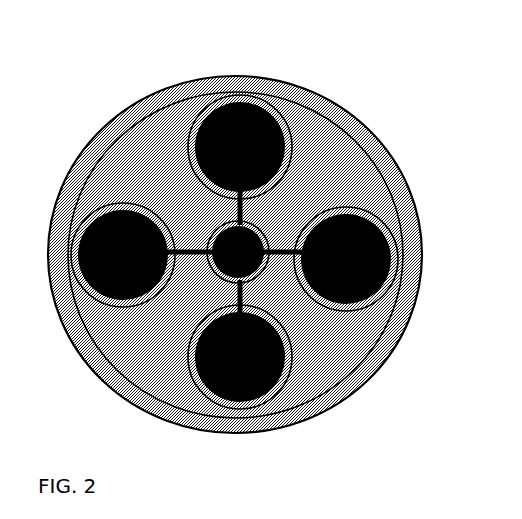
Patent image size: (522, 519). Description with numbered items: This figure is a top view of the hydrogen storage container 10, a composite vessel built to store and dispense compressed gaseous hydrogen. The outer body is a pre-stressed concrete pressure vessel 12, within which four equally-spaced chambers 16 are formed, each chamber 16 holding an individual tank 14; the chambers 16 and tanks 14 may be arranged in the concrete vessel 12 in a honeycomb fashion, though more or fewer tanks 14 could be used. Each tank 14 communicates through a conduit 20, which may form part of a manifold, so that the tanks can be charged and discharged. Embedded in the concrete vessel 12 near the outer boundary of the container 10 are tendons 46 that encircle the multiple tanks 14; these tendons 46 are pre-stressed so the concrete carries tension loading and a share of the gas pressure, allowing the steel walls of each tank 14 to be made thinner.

The hydrogen storage container 10 is at (150, 63).
The pre-stressed concrete pressure vessel 12 is at (360, 377).
The tank 14 is at (380, 295).
The chamber 16 is at (393, 258).
The conduit 20 is at (250, 214).
The tendons 46 is at (365, 153).